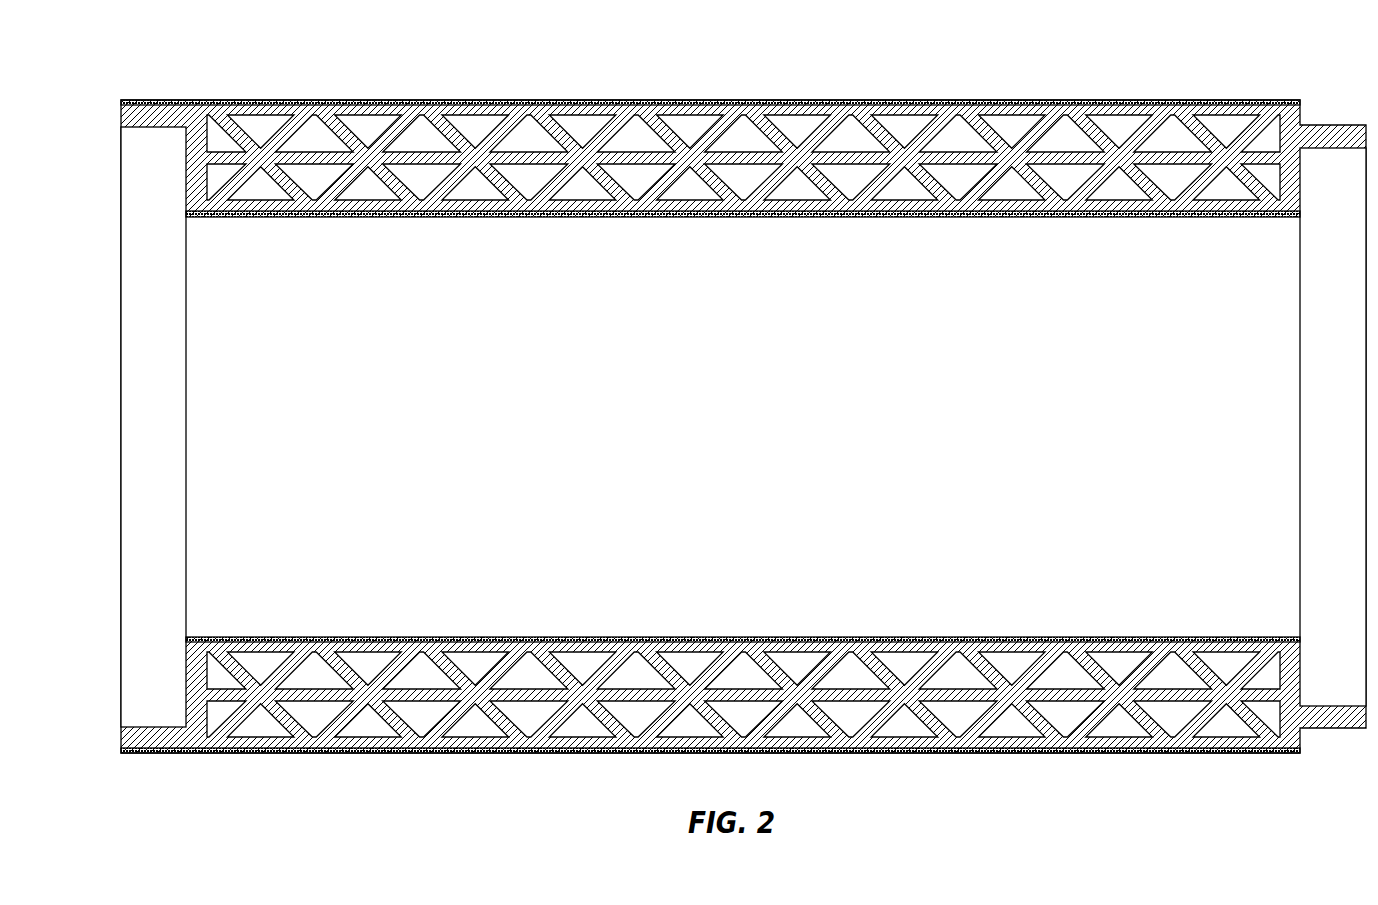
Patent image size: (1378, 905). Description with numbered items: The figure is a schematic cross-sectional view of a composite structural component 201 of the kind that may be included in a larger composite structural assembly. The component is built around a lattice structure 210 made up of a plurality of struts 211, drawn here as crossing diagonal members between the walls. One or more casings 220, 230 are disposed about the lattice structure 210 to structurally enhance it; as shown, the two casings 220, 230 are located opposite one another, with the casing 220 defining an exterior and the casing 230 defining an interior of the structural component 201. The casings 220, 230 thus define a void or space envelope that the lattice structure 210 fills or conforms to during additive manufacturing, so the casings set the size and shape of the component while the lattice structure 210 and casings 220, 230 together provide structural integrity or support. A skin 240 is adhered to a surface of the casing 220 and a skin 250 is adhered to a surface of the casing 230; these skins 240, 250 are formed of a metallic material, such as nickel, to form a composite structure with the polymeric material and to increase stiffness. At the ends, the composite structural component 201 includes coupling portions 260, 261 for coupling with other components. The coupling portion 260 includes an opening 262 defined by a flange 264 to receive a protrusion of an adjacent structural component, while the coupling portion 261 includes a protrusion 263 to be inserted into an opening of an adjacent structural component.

The composite structural component 201 is at (639, 36).
The lattice structure 210 is at (586, 122).
The struts 211 is at (712, 133).
The casing 220 is at (793, 107).
The casing 230 is at (800, 203).
The skin 240 is at (1010, 103).
The skin 250 is at (1018, 215).
The coupling portion 260 is at (141, 398).
The coupling portion 261 is at (1324, 395).
The opening 262 is at (138, 379).
The protrusion 263 is at (1355, 125).
The flange 264 is at (158, 127).